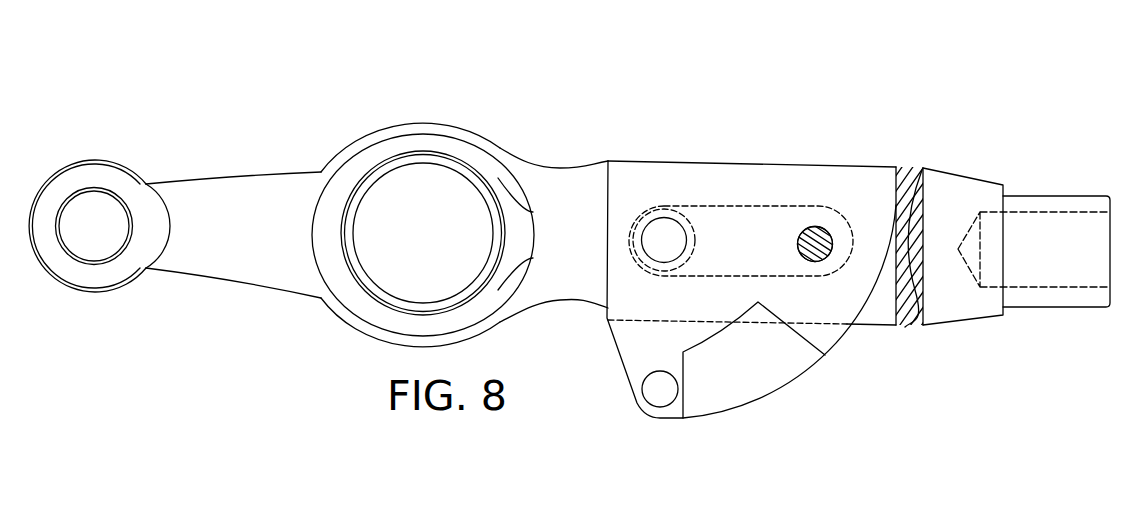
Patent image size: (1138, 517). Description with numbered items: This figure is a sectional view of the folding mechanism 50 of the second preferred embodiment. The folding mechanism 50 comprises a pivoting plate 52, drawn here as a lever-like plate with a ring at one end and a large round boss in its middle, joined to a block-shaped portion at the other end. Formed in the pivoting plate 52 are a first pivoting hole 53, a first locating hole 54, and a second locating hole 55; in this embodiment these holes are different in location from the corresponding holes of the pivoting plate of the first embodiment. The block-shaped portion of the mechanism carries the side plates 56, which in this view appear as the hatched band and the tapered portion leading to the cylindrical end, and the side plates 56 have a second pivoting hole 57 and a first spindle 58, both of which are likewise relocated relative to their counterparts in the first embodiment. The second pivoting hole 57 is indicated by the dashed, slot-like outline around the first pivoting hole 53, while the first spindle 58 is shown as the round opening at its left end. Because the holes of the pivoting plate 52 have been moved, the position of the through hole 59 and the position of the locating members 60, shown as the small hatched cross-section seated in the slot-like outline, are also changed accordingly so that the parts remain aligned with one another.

The folding mechanism 50 is at (630, 80).
The pivoting plate 52 is at (620, 335).
The first pivoting hole 53 is at (668, 215).
The second pivoting hole 57 is at (741, 241).
The first locating hole 54 is at (819, 226).
The through hole 59 is at (815, 244).
The second locating hole 55 is at (648, 387).
The side plates 56 is at (870, 313).
The first spindle 58 is at (658, 238).
The locating members 60 is at (814, 253).